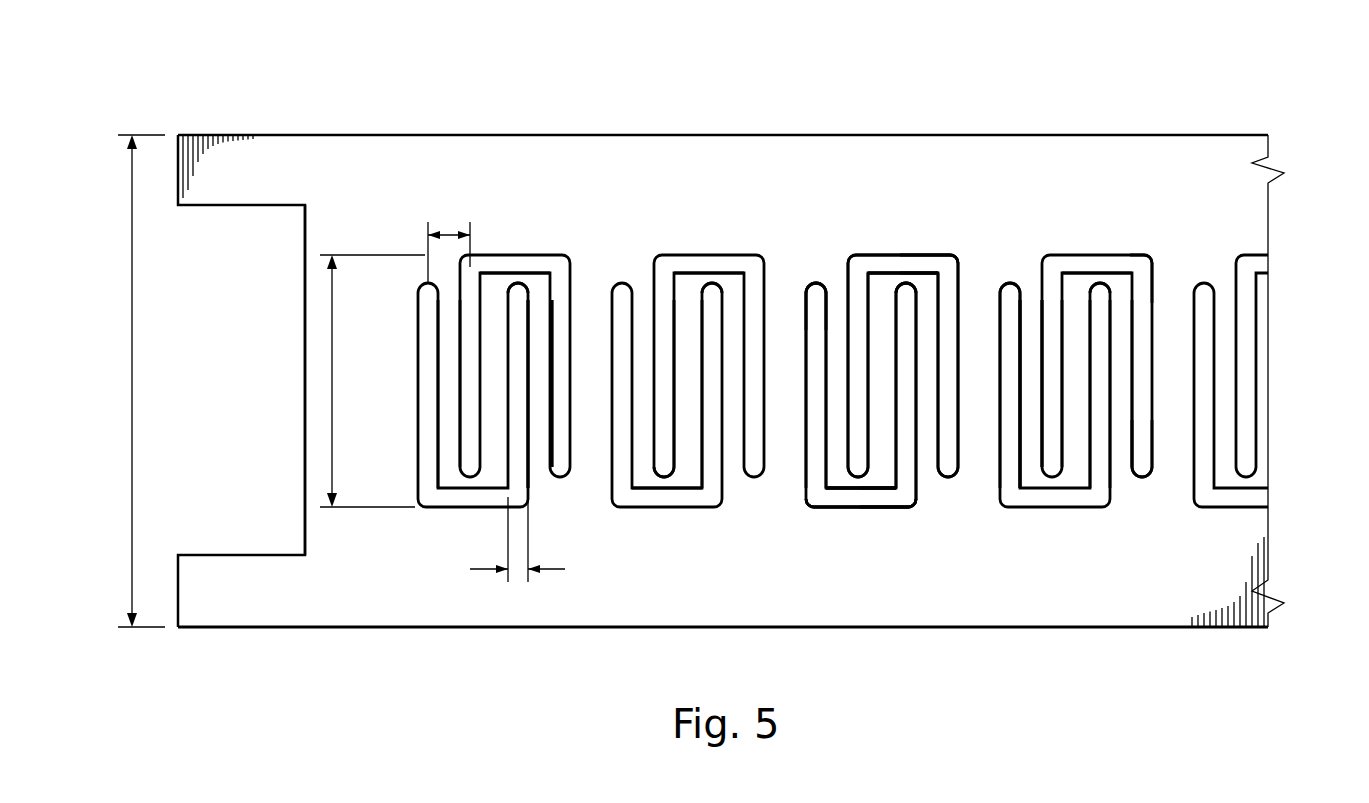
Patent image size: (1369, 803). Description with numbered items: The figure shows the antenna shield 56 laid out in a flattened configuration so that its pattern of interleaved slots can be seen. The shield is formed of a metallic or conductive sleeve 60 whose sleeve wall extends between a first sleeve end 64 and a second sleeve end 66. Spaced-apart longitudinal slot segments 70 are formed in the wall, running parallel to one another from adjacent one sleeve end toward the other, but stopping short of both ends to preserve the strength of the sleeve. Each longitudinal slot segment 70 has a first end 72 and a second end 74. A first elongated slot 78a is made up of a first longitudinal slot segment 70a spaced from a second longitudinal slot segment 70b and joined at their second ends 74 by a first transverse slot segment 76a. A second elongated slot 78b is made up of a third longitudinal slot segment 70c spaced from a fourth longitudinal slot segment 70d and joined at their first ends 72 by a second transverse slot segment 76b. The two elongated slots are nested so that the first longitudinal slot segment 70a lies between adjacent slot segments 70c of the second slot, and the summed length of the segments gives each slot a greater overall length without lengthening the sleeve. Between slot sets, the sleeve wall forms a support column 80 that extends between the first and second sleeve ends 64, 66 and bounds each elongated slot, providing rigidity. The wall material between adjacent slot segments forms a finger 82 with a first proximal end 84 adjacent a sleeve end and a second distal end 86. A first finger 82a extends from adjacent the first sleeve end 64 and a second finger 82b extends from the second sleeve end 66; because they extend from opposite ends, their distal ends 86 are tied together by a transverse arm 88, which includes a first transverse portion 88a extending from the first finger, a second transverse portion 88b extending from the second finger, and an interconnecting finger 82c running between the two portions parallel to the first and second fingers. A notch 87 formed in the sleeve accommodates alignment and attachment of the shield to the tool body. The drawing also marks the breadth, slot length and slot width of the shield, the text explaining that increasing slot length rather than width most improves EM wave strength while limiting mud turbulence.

The antenna shield 56 is at (472, 51).
The sleeve 60 is at (775, 134).
The first sleeve end 64 is at (353, 134).
The second sleeve end 66 is at (393, 629).
The longitudinal slot segment 70 is at (1143, 348).
The first longitudinal slot segment 70a is at (812, 438).
The second longitudinal slot segment 70b is at (903, 448).
The third longitudinal slot segment 70c is at (857, 287).
The fourth longitudinal slot segment 70d is at (948, 295).
The first end 72 is at (815, 292).
The second end 74 is at (818, 497).
The first transverse slot segment 76a is at (885, 497).
The second transverse slot segment 76b is at (942, 260).
The first elongated slot 78a is at (913, 242).
The second elongated slot 78b is at (842, 522).
The support column 80 is at (305, 305).
The finger 82 is at (540, 285).
The first finger 82a is at (450, 438).
The second finger 82b is at (538, 453).
The interconnecting finger 82c is at (688, 407).
The first proximal end 84 is at (1010, 310).
The second distal end 86 is at (1032, 473).
The notch 87 is at (229, 207).
The transverse arm 88 is at (518, 270).
The first transverse portion 88a is at (712, 283).
The second transverse portion 88b is at (663, 482).